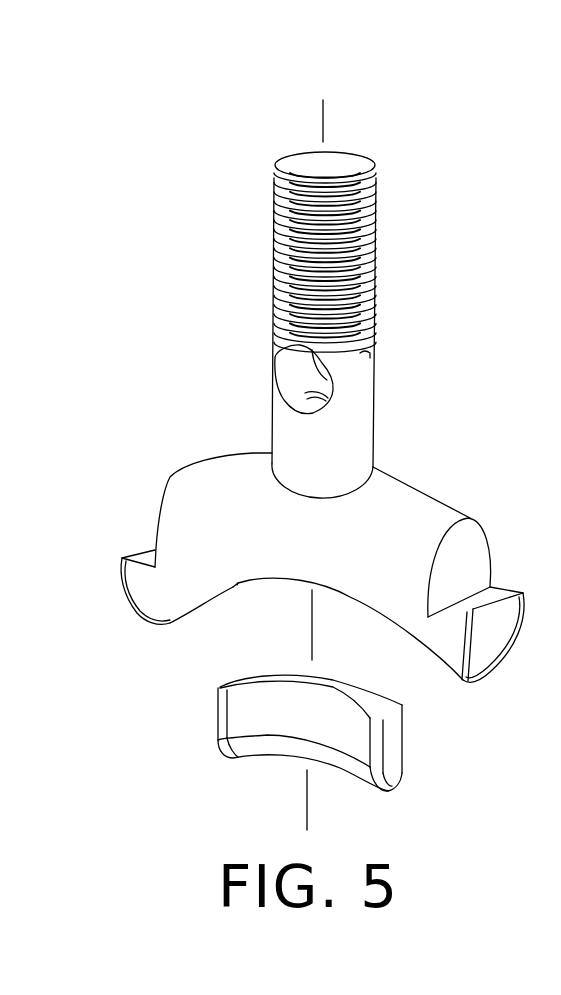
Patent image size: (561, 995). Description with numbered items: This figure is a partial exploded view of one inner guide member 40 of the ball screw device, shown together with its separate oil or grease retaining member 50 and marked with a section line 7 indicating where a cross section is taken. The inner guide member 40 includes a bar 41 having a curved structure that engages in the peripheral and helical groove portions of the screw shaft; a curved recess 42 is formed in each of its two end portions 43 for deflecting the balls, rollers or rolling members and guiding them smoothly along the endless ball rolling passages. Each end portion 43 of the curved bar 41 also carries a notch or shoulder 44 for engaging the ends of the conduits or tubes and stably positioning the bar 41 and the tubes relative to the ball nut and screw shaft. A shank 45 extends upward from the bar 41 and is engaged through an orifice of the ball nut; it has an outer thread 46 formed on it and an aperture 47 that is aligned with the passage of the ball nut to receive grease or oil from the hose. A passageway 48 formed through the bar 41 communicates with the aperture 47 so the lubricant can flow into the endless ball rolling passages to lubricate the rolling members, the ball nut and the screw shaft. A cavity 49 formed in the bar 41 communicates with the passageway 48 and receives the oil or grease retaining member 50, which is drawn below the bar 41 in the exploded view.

The section line 7- 7 is at (368, 133).
The inner guide member 40 is at (307, 448).
The bar 41 is at (307, 581).
The curved recess 42 is at (495, 648).
The end portion 43 is at (122, 585).
The shoulder 44 is at (478, 575).
The shank 45 is at (373, 402).
The outer thread 46 is at (373, 255).
The aperture 47 is at (253, 359).
The passageway 48 is at (315, 394).
The cavity 49 is at (233, 590).
The oil or grease retaining member 50 is at (402, 735).